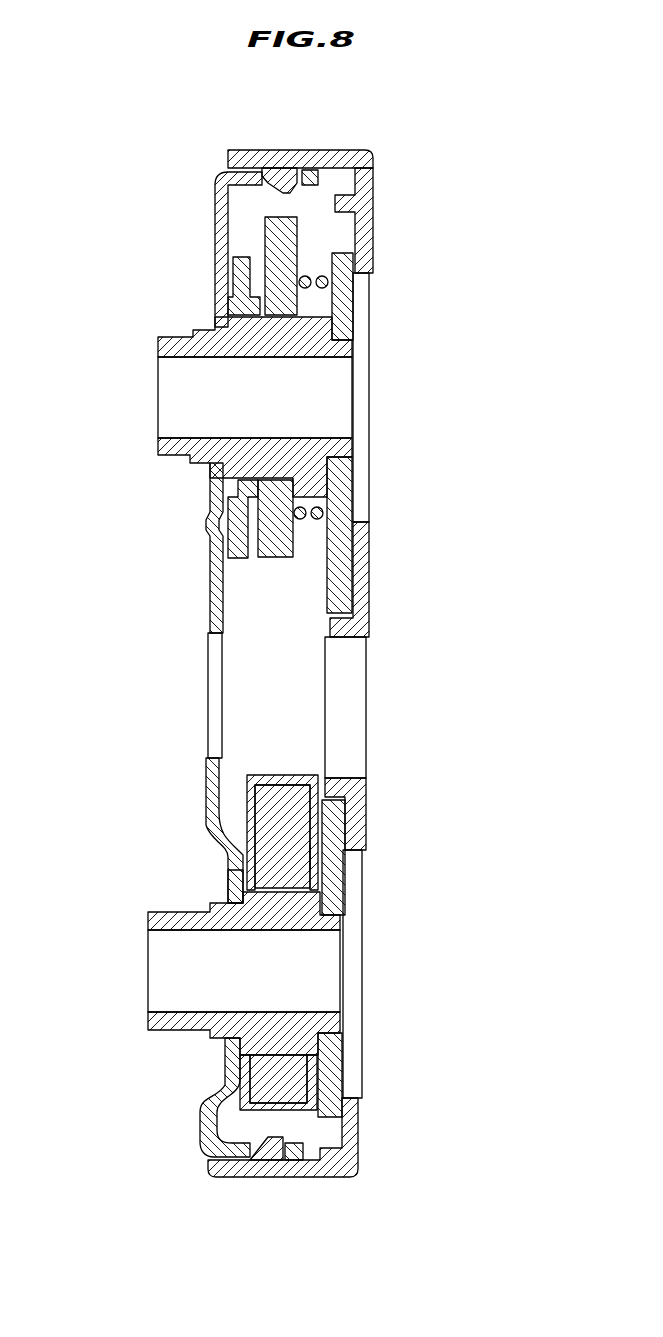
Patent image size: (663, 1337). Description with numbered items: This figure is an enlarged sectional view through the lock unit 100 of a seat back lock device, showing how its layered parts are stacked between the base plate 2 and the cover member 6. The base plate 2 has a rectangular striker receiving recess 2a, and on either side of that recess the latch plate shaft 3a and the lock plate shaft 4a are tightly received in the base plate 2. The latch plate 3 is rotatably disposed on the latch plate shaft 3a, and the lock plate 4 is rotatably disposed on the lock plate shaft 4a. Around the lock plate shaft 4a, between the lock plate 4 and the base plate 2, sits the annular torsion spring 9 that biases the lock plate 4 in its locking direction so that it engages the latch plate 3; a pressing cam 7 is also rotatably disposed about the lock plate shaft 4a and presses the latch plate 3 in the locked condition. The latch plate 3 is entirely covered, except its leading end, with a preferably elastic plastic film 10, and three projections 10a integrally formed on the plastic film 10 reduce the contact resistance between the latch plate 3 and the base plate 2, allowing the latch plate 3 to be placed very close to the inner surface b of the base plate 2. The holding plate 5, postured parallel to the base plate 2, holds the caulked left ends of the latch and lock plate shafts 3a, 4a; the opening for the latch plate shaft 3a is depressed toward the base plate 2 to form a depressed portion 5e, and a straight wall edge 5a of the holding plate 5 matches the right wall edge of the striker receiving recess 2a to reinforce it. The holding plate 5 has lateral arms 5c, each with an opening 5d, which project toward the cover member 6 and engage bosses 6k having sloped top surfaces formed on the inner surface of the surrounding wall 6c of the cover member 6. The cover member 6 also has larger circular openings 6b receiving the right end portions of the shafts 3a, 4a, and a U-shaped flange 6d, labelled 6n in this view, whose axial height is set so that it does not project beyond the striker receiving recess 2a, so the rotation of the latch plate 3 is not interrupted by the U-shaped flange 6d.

The lock unit 100 is at (470, 274).
The base plate 2 is at (340, 592).
The striker receiving recess 2a is at (406, 707).
The cover cylindrical portion 6n is at (355, 705).
The latch plate 3 is at (272, 832).
The latch plate shaft 3a is at (157, 1015).
The lock plate 4 is at (270, 230).
The lock plate shaft 4a is at (165, 345).
The holding plate 5 is at (195, 810).
The straight wall edge 5a is at (207, 760).
The arm 5c is at (312, 170).
The opening 5d is at (277, 150).
The depressed portion 5e is at (228, 870).
The cover member 6 is at (325, 665).
The circular opening 6b is at (363, 402).
The surrounding wall 6c is at (240, 149).
The U-shaped flange 6d is at (330, 627).
The boss 6k is at (297, 192).
The pressing cam 7 is at (245, 310).
The annular torsion spring 9 is at (303, 521).
The plastic film 10 is at (247, 780).
The projection 10a is at (315, 1080).
The inner surface of the base plate b is at (307, 857).